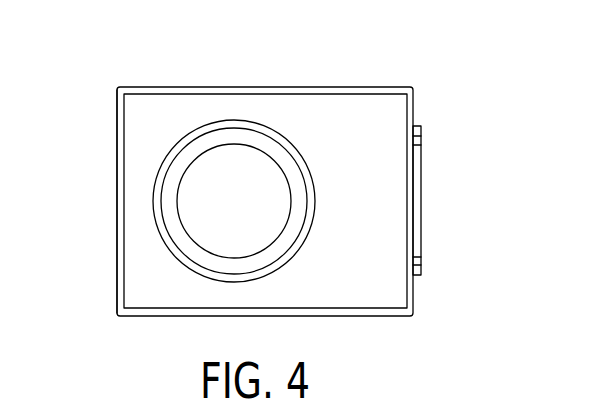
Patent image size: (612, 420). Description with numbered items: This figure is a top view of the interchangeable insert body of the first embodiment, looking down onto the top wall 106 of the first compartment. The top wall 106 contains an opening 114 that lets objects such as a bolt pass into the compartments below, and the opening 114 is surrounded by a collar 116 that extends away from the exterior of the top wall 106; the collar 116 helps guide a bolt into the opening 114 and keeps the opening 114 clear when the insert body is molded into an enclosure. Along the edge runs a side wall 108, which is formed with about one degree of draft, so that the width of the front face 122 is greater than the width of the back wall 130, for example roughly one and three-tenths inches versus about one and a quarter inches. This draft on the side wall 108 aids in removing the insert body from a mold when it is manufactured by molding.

The top wall 106 is at (390, 127).
The side wall 108 is at (360, 86).
The opening 114 is at (245, 172).
The collar 116 is at (198, 130).
The front face 122 is at (413, 291).
The back wall 130 is at (117, 155).